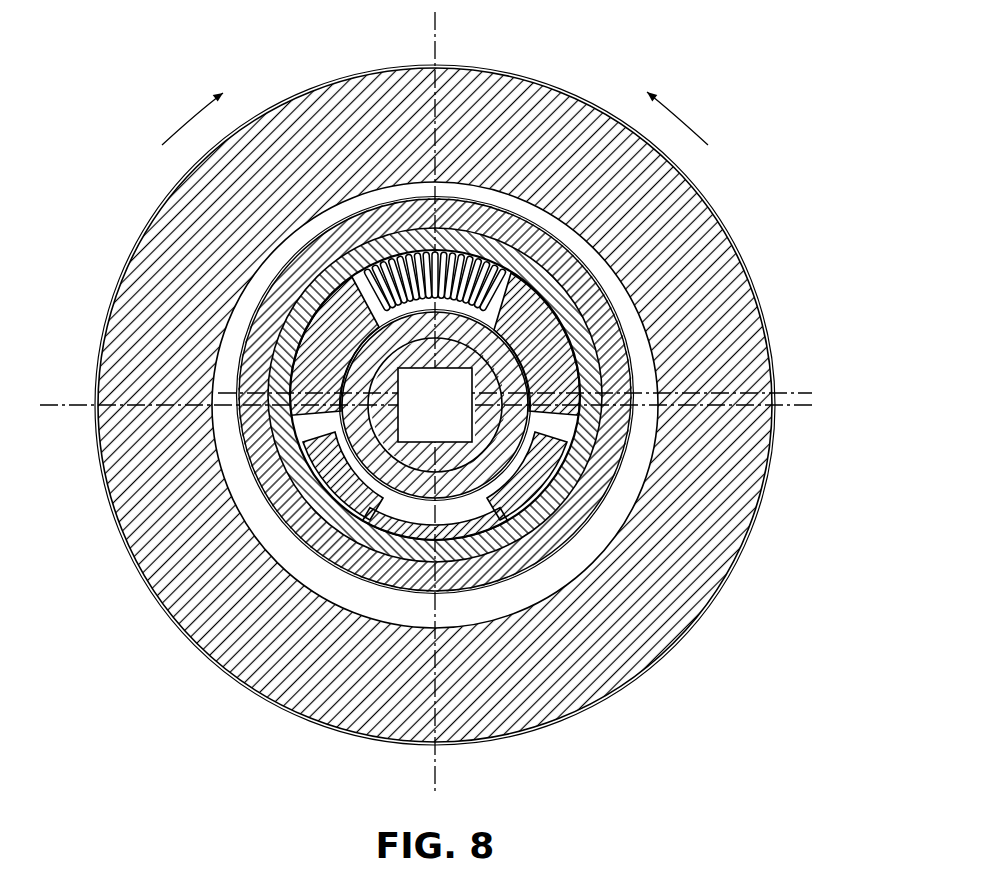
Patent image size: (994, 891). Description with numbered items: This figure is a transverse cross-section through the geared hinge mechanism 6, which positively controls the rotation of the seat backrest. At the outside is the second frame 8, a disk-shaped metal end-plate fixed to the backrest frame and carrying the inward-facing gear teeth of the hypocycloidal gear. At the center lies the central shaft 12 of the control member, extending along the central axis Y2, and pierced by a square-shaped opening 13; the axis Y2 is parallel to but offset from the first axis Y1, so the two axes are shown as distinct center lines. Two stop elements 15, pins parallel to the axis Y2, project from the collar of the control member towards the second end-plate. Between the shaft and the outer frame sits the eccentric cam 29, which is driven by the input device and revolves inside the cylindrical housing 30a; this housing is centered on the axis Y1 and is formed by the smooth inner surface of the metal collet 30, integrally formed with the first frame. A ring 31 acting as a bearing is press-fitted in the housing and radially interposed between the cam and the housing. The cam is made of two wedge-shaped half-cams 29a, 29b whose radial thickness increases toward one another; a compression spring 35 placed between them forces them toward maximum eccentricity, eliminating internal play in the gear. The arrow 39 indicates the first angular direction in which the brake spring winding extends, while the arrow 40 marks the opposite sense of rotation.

The hinge mechanism 6 is at (742, 82).
The second frame 8 is at (567, 672).
The central shaft 12 is at (484, 438).
The opening 13 is at (477, 416).
The stop element 15 is at (497, 508).
The eccentric cam 29 is at (412, 435).
The half-cam 29a is at (560, 356).
The half-cam 29b is at (307, 360).
The collet 30 is at (250, 537).
The cylindrical housing 30a is at (335, 395).
The ring 31 is at (538, 523).
The spring 35 is at (478, 268).
The first angular direction 39 is at (185, 120).
The rotation direction 40 is at (685, 118).
The axis Y1 is at (792, 391).
The central axis Y2 is at (793, 407).